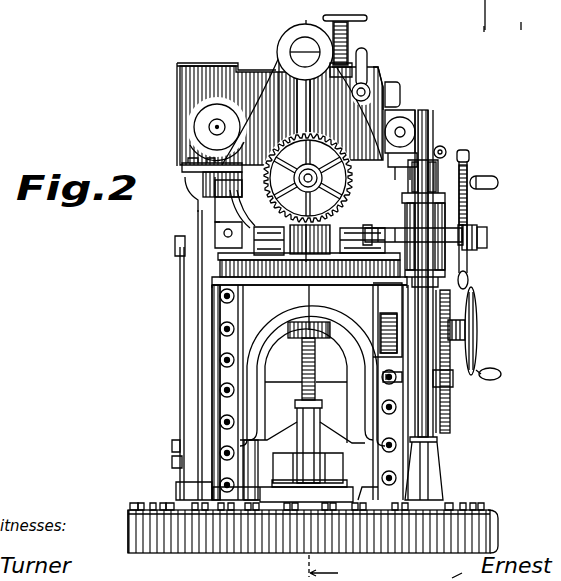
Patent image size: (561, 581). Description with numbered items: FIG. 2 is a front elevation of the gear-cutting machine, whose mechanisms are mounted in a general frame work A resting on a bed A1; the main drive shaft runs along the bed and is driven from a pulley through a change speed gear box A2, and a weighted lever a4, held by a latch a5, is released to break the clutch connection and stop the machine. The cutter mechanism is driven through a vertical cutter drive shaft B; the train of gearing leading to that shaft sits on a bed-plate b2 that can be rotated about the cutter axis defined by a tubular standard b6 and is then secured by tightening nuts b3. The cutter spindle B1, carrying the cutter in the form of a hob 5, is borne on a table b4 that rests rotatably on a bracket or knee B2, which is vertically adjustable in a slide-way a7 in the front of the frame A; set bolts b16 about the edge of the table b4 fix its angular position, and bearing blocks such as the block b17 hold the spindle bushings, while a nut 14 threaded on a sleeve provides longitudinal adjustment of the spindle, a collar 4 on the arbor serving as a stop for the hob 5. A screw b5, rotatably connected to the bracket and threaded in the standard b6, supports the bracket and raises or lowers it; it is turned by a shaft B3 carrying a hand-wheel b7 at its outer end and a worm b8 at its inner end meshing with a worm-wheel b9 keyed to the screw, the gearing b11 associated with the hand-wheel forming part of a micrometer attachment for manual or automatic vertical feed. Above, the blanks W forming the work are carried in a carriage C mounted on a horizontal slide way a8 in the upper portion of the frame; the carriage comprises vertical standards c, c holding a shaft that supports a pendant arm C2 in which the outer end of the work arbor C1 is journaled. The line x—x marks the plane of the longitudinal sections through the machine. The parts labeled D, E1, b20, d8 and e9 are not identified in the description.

The frame work A is at (198, 352).
The bed A1 is at (488, 528).
The change speed gear box A2 is at (517, 18).
The cutter drive shaft B is at (436, 131).
The cutter-spindle B1 is at (340, 223).
The bracket or knee B2 is at (283, 295).
The shaft B3 is at (412, 353).
The carriage C is at (261, 118).
The work arbor C1 is at (277, 50).
The pendant arm C2 is at (400, 88).
The cam D is at (210, 129).
The wheel bracket E1 is at (405, 136).
The blanks W is at (252, 202).
The weighted lever a4 is at (468, 15).
The latch a5 is at (487, 36).
The slide-way a7 is at (238, 402).
The horizontal slide way a8 is at (230, 180).
The bed-plate b2 is at (128, 516).
The nuts b3 is at (171, 504).
The table b4 is at (184, 261).
The screw b5 is at (300, 364).
The tubular standard b6 is at (298, 423).
The hand-wheel b7 is at (455, 348).
The worm b8 is at (292, 334).
The worm-wheel b9 is at (329, 340).
The gearing b11 is at (458, 322).
The set bolts b16 is at (402, 187).
The bearing block b17 is at (200, 226).
The bracket b20 is at (214, 234).
The vertical standards c is at (317, 97).
The slot d8 is at (368, 85).
The eccentric e9 is at (468, 271).
The section line x is at (305, 133).
The collar 4 is at (396, 13).
The hob 5 is at (148, 7).
The nut 14 is at (480, 251).